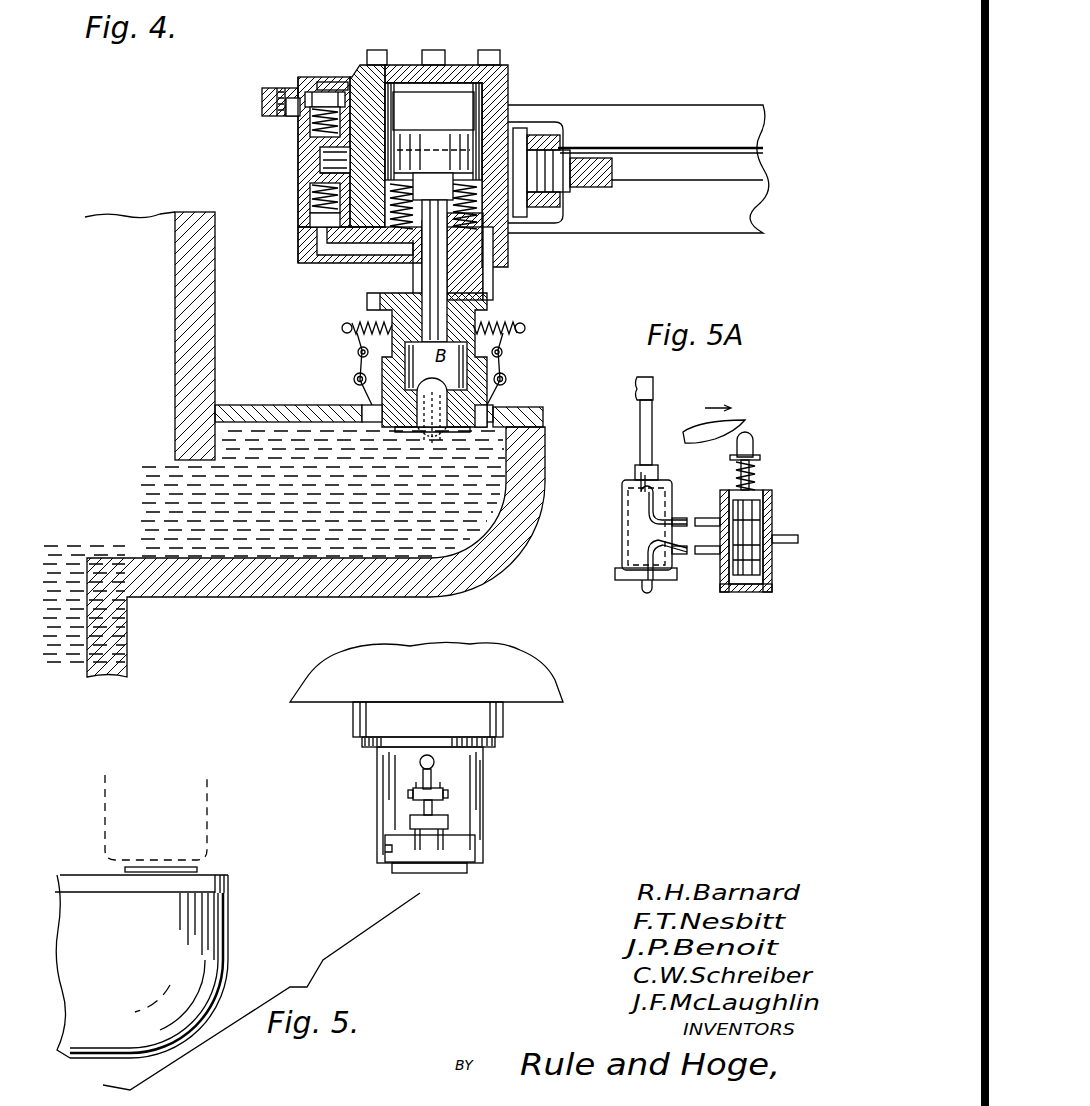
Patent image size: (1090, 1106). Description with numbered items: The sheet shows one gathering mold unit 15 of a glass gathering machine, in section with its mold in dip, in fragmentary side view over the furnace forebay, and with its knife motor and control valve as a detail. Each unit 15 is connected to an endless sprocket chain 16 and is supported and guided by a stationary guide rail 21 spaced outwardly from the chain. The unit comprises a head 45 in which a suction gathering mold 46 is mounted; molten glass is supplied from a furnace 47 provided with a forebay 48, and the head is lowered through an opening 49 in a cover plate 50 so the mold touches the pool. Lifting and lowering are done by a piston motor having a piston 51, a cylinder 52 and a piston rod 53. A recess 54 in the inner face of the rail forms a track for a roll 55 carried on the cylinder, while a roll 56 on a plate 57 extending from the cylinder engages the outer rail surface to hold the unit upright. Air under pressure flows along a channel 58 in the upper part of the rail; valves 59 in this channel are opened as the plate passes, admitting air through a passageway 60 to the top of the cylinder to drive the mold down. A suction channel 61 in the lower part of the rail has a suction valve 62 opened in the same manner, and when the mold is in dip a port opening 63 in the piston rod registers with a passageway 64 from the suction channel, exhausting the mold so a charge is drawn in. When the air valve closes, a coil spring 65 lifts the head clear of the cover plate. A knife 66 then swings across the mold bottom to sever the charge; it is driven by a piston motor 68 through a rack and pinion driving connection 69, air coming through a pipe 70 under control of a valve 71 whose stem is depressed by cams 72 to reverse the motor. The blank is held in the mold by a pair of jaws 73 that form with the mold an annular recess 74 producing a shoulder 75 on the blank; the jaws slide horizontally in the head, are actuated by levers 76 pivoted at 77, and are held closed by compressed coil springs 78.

In FIG. 4, the gathering mold unit 15 is at (272, 176).
In FIG. 5, the gathering mold unit 15 is at (520, 719).
In FIG. 4, the endless sprocket chain 16 is at (600, 187).
In FIG. 4, the guide rail 21 is at (682, 118).
In FIG. 5, the guide rail 21 is at (540, 668).
In FIG. 4, the head 45 is at (370, 300).
In FIG. 5, the head 45 is at (485, 790).
In FIG. 4, the suction gathering mold 46 is at (490, 410).
In FIG. 4, the furnace 47 is at (215, 370).
In FIG. 4, the forebay 48 is at (538, 500).
In FIG. 5, the forebay 48 is at (222, 930).
In FIG. 4, the opening 49 is at (543, 415).
In FIG. 4, the cover plate 50 is at (250, 405).
In FIG. 5, the cover plate 50 is at (74, 875).
In FIG. 4, the piston 51 is at (458, 135).
In FIG. 4, the cylinder 52 is at (506, 80).
In FIG. 4, the piston rod 53 is at (493, 278).
In FIG. 4, the recess 54 is at (320, 172).
In FIG. 4, the roll 55 is at (330, 160).
In FIG. 4, the roll 56 is at (290, 112).
In FIG. 4, the plate 57 is at (276, 88).
In FIG. 4, the channel 58 is at (308, 133).
In FIG. 4, the valve 59 is at (305, 120).
In FIG. 4, the passageway 60 is at (352, 90).
In FIG. 4, the suction channel 61 is at (315, 190).
In FIG. 4, the suction valve 62 is at (310, 220).
In FIG. 4, the port opening 63 is at (400, 250).
In FIG. 4, the passageway 64 is at (330, 245).
In FIG. 4, the coil spring 65 is at (478, 228).
In FIG. 5, the knife 66 is at (130, 872).
In FIG. 5A, the piston motor 68 is at (622, 518).
In FIG. 5A, the rack and pinion driving connection 69 is at (653, 385).
In FIG. 5A, the pipe 70 is at (790, 543).
In FIG. 5A, the valve 71 is at (782, 515).
In FIG. 5A, the cam 72 is at (690, 443).
In FIG. 4, the jaw 73 is at (480, 428).
In FIG. 5, the jaw 73 is at (465, 860).
In FIG. 4, the annular recess 74 is at (362, 408).
In FIG. 4, the shoulder 75 is at (356, 386).
In FIG. 4, the lever 76 is at (507, 365).
In FIG. 5, the lever 76 is at (430, 808).
In FIG. 4, the pivot 77 is at (504, 352).
In FIG. 5, the pivot 77 is at (412, 793).
In FIG. 4, the coil spring 78 is at (516, 323).
In FIG. 5, the coil spring 78 is at (420, 762).